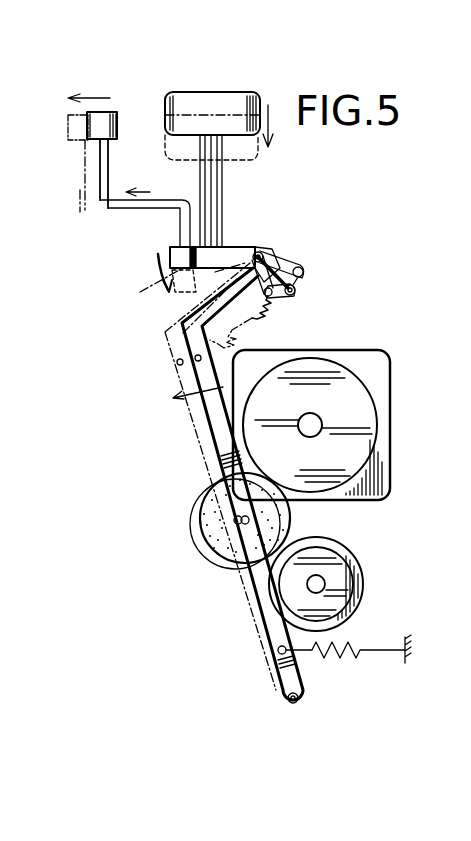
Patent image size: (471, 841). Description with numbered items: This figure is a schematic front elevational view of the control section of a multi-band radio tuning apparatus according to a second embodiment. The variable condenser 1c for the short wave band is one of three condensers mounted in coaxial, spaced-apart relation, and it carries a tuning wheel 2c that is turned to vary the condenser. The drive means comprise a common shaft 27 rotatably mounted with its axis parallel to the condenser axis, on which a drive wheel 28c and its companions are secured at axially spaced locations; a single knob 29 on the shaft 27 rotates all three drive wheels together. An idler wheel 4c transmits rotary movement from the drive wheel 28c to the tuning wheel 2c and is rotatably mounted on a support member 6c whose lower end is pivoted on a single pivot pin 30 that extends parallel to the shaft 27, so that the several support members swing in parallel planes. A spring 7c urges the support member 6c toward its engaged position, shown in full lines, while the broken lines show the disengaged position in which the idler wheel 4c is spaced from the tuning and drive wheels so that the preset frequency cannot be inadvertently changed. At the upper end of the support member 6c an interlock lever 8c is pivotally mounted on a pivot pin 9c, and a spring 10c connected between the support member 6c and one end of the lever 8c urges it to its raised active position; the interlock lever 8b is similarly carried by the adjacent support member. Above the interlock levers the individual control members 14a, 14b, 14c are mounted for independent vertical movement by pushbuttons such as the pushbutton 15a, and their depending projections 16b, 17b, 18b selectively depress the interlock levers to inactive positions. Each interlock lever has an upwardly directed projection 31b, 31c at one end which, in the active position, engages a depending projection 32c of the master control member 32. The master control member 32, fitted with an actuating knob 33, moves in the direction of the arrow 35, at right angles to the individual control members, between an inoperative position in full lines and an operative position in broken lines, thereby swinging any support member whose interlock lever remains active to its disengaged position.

The variable condenser 1c is at (386, 366).
The tuning wheel 2c is at (378, 421).
The idler wheel 4c is at (303, 523).
The support member 6c is at (185, 440).
The spring 7c is at (354, 651).
The interlock lever 8b is at (300, 282).
The interlock lever 8c is at (298, 289).
The pivot pin 9c is at (304, 272).
The spring 10c is at (262, 317).
The individual control member 14a is at (200, 178).
The individual control member 14b is at (221, 178).
The individual control member 14c is at (224, 204).
The pushbutton 15a is at (212, 103).
The depending projection 16b is at (181, 220).
The depending projection 17b is at (235, 216).
The depending projection 18b is at (263, 252).
The common shaft 27 is at (324, 584).
The drive wheel 28c is at (337, 553).
The knob 29 is at (333, 600).
The pivot pin 30 is at (299, 699).
The upwardly directed projection 31b is at (166, 288).
The upwardly directed projection 31c is at (134, 252).
The master control member 32 is at (100, 204).
The depending projection 32c is at (187, 246).
The actuating knob 33 is at (112, 110).
The arrow 35 is at (152, 188).